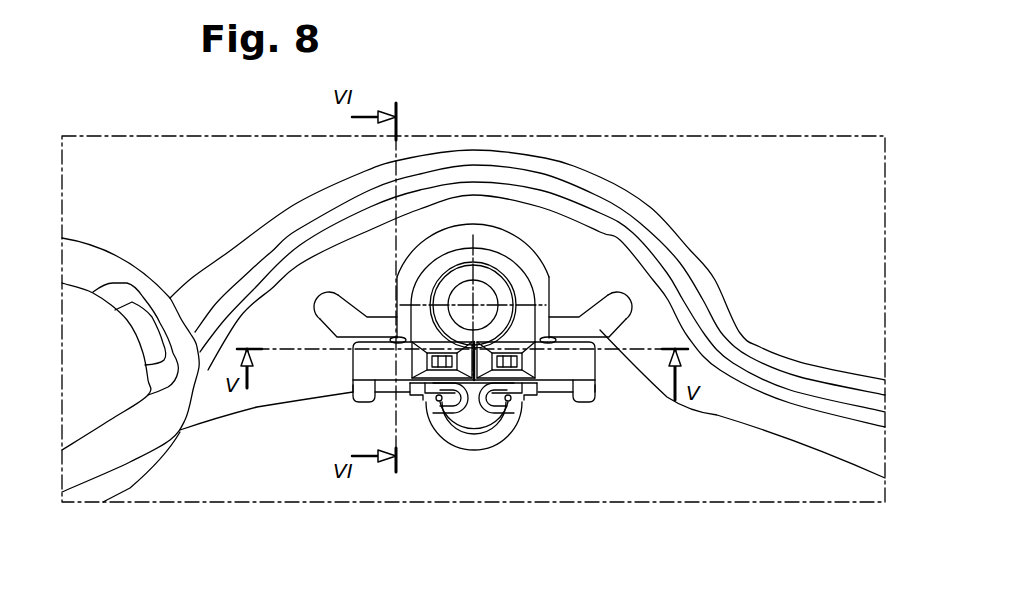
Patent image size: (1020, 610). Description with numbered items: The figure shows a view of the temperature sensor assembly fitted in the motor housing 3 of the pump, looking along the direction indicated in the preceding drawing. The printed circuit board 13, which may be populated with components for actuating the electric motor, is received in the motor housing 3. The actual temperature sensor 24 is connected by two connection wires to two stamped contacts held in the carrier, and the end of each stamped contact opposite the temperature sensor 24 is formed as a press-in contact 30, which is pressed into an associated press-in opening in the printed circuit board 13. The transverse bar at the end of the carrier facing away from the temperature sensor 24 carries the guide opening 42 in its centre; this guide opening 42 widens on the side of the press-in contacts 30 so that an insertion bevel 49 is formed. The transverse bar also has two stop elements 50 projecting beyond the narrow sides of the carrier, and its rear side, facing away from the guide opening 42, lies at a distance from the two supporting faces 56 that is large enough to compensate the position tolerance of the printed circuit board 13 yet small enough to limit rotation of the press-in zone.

The motor housing 3 is at (812, 387).
The printed circuit board 13 is at (727, 447).
The temperature sensor 24 is at (475, 415).
The press-in contact 30 is at (535, 305).
The guide opening 42 is at (483, 290).
The insertion bevel 49 is at (458, 278).
The stop element 50 is at (573, 360).
The supporting face 56 is at (387, 392).